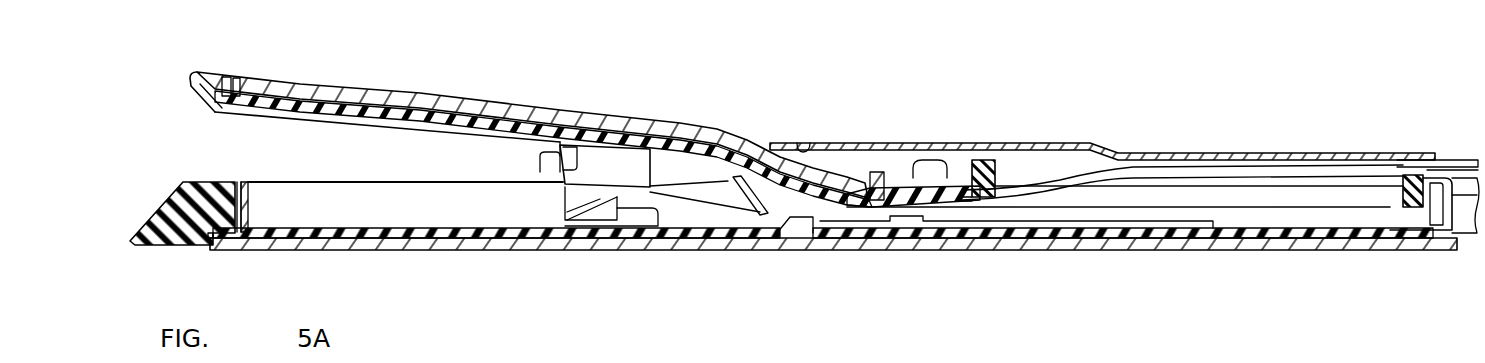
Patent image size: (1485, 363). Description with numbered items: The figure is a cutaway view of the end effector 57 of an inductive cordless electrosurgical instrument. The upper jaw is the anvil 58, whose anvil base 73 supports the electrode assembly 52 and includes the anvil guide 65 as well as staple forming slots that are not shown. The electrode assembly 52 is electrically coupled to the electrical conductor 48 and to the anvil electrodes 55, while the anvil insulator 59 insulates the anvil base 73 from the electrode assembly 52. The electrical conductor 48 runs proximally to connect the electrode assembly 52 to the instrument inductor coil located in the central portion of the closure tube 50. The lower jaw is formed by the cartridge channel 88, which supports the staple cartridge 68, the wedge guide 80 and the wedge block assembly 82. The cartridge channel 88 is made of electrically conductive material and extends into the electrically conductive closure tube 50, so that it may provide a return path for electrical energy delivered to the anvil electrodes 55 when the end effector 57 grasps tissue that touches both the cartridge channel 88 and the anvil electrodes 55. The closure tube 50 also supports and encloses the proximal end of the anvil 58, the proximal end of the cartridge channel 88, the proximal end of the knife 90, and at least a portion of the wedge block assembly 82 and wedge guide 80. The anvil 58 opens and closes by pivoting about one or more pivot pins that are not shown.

The electrical conductor 48 is at (1140, 172).
The closure tube 50 is at (838, 143).
The electrode assembly 52 is at (462, 136).
The anvil electrodes 55 is at (366, 127).
The end effector 57 is at (208, 150).
The anvil 58 is at (358, 64).
The anvil insulator 59 is at (522, 112).
The anvil guide 65 is at (615, 165).
The staple cartridge 68 is at (178, 237).
The anvil base 73 is at (457, 108).
The wedge guide 80 is at (988, 160).
The wedge block assembly 82 is at (1407, 177).
The cartridge channel 88 is at (453, 247).
The knife 90 is at (768, 208).